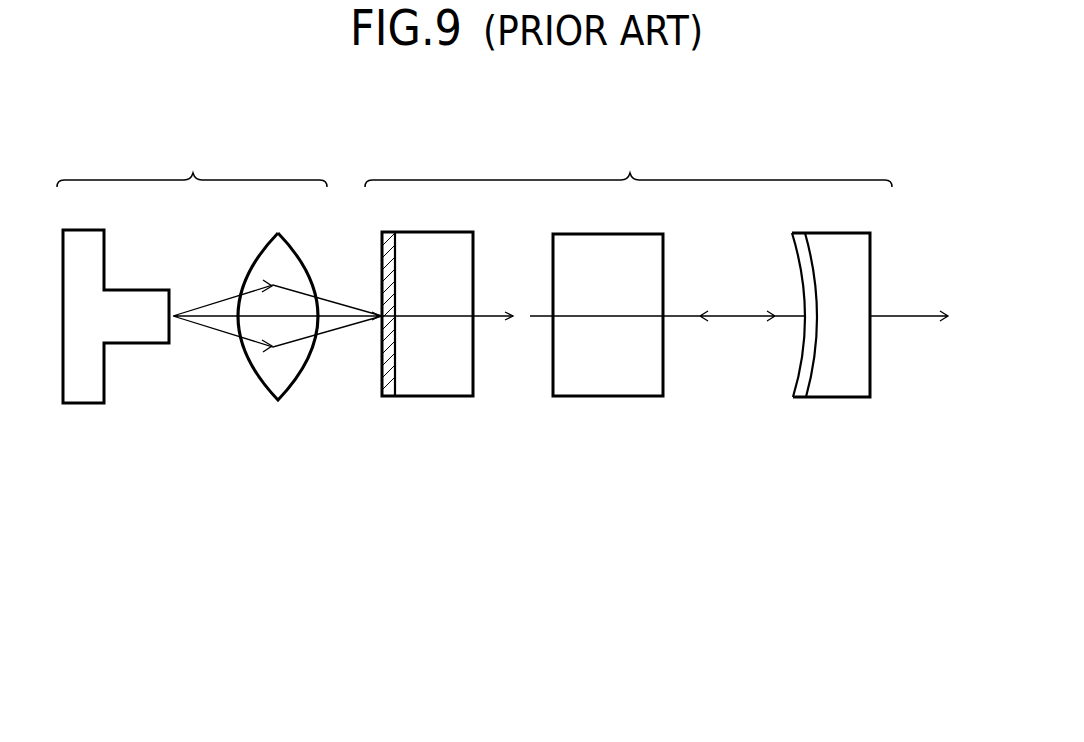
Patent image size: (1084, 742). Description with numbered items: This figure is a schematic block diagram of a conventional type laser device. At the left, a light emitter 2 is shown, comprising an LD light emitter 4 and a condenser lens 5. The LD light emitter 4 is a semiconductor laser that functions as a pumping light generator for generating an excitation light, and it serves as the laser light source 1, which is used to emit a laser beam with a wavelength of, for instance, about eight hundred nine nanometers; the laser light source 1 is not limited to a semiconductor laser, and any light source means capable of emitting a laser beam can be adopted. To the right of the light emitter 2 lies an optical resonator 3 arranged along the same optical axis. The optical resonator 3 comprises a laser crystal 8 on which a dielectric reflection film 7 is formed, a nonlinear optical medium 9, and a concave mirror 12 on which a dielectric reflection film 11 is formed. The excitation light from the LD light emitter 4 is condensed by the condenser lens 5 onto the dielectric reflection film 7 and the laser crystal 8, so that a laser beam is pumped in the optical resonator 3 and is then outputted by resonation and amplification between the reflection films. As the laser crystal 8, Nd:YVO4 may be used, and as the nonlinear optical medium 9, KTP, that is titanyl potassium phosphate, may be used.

The laser light source 1 is at (525, 397).
The light emitter 2 is at (193, 173).
The optical resonator 3 is at (630, 173).
The LD light emitter 4 is at (82, 403).
The condenser lens 5 is at (258, 383).
The dielectric reflection film 7 is at (382, 376).
The laser crystal 8 is at (438, 396).
The nonlinear optical medium 9 is at (612, 396).
The dielectric reflection film 11 is at (800, 383).
The concave mirror 12 is at (792, 363).